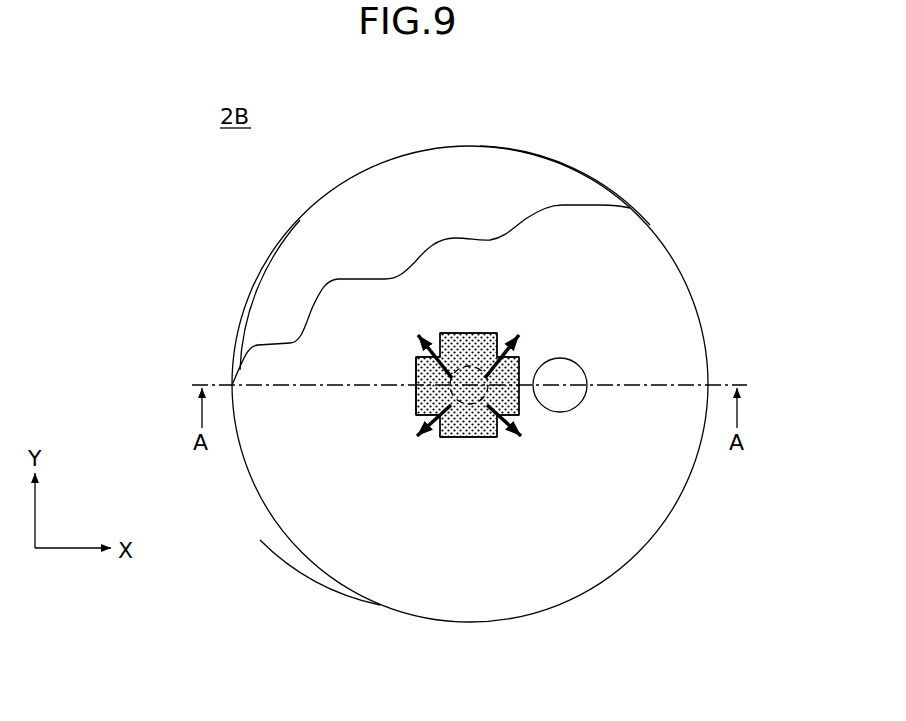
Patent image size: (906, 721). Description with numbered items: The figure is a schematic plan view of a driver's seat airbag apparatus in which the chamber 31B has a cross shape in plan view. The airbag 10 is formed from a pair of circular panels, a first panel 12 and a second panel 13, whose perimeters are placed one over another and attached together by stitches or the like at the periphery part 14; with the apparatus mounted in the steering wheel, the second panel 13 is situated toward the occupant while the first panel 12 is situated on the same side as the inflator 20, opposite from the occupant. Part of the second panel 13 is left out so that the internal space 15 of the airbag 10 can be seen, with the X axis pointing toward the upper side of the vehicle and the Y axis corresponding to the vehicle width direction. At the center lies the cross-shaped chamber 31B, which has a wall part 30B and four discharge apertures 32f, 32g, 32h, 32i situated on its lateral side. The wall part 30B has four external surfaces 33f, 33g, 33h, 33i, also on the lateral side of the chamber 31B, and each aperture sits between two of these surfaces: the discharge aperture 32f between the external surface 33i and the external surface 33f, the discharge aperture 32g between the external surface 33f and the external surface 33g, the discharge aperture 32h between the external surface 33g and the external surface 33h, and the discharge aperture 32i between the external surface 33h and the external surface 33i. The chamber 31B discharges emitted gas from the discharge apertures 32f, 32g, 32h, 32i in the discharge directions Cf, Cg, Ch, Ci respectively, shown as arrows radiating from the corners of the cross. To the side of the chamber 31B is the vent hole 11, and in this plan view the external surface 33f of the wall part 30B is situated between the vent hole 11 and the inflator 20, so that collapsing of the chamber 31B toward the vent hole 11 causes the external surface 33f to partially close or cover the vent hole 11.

The airbag 10 is at (727, 133).
The vent hole 11 is at (584, 373).
The first panel 12 is at (617, 246).
The second panel 13 is at (562, 190).
The periphery part 14 is at (292, 223).
The internal space 15 is at (320, 545).
The inflator 20 is at (456, 404).
The wall part 30B is at (428, 378).
The chamber 31B is at (413, 366).
The discharge aperture 32i is at (431, 334).
The discharge aperture 32f is at (505, 333).
The discharge aperture 32h is at (415, 421).
The discharge aperture 32g is at (521, 421).
The external surface 33i is at (466, 333).
The external surface 33f is at (520, 413).
The external surface 33h is at (416, 410).
The external surface 33g is at (483, 438).
The discharge direction Ci is at (414, 340).
The discharge direction Cf is at (512, 348).
The discharge direction Ch is at (437, 434).
The discharge direction Cg is at (506, 434).